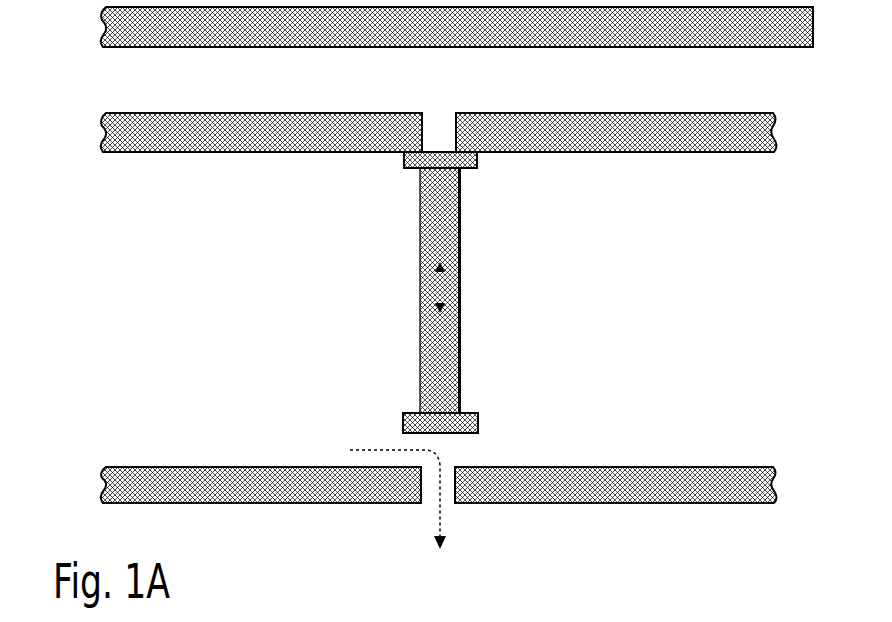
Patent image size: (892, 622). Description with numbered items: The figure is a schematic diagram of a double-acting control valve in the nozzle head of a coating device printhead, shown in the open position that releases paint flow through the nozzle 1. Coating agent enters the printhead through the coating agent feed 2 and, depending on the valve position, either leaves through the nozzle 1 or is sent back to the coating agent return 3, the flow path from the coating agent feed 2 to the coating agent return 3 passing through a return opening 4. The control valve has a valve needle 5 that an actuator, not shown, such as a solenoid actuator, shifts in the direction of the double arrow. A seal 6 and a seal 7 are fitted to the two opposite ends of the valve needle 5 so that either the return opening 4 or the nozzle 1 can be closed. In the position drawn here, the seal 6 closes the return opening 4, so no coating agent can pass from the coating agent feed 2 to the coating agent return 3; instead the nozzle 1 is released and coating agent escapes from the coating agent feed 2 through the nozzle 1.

The nozzle 1 is at (447, 487).
The coating agent feed 2 is at (238, 333).
The coating agent return 3 is at (241, 89).
The return opening 4 is at (437, 131).
The valve needle 5 is at (462, 364).
The seal 6 is at (477, 160).
The seal 7 is at (478, 421).